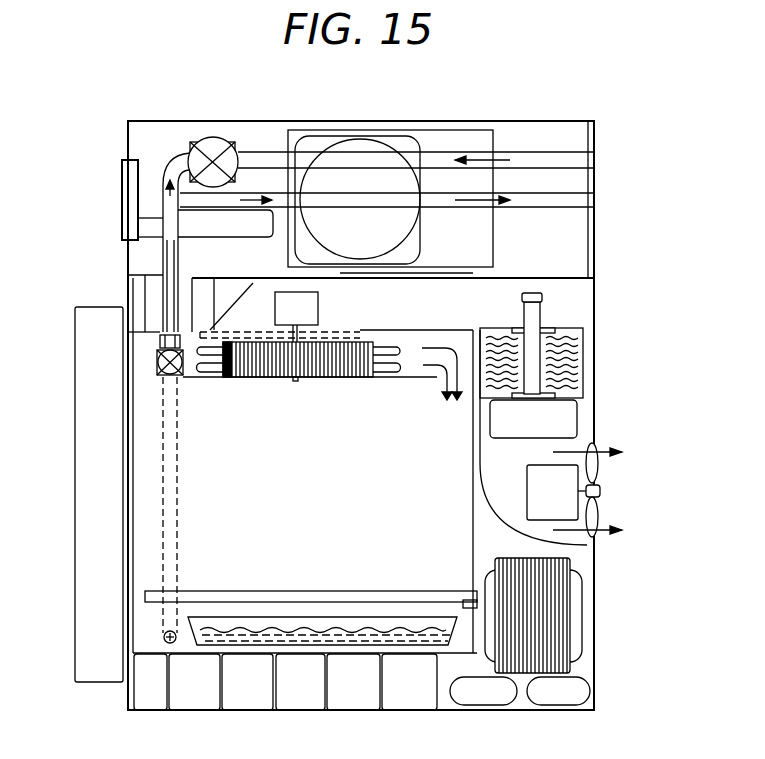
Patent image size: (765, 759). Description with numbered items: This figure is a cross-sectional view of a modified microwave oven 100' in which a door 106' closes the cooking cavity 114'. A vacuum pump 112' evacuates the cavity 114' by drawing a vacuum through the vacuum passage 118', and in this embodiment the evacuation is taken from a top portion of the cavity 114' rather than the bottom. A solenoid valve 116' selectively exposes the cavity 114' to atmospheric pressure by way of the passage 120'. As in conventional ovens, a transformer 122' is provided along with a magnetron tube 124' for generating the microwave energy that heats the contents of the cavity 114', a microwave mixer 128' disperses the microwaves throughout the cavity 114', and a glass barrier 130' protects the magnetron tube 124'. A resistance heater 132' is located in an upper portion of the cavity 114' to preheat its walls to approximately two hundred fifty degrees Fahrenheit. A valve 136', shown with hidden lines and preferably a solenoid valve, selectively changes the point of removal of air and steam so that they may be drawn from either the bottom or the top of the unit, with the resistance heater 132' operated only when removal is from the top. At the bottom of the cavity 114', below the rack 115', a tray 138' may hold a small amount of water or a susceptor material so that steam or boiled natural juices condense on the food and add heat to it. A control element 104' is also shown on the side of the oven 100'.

The microwave oven 100' is at (361, 388).
The control unit 104' is at (106, 196).
The door 106' is at (65, 494).
The vacuum pump 112' is at (390, 170).
The cavity 114' is at (72, 415).
The rack 115' is at (311, 569).
The solenoid valve 116' is at (227, 135).
The vacuum passage 118' is at (218, 258).
The passage 120' is at (398, 139).
The transformer 122' is at (576, 615).
The magnetron tube 124' is at (573, 415).
The microwave mixer 128' is at (331, 315).
The glass barrier 130' is at (285, 396).
The resistance heater 132' is at (375, 398).
The valve 136' is at (95, 489).
The tray 138' is at (265, 680).